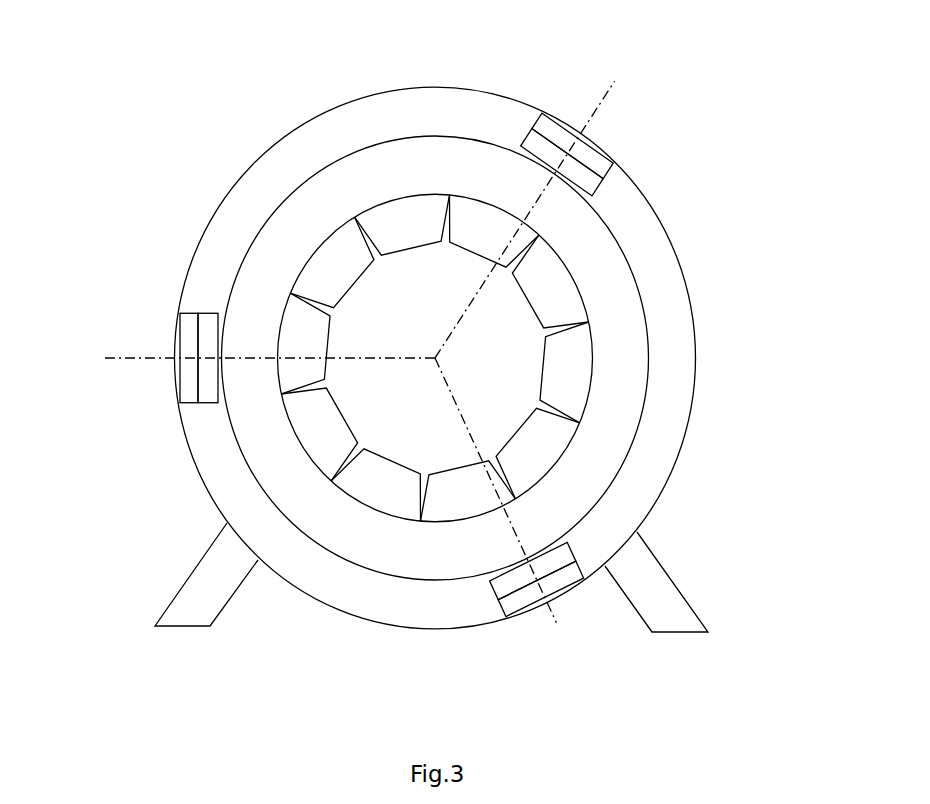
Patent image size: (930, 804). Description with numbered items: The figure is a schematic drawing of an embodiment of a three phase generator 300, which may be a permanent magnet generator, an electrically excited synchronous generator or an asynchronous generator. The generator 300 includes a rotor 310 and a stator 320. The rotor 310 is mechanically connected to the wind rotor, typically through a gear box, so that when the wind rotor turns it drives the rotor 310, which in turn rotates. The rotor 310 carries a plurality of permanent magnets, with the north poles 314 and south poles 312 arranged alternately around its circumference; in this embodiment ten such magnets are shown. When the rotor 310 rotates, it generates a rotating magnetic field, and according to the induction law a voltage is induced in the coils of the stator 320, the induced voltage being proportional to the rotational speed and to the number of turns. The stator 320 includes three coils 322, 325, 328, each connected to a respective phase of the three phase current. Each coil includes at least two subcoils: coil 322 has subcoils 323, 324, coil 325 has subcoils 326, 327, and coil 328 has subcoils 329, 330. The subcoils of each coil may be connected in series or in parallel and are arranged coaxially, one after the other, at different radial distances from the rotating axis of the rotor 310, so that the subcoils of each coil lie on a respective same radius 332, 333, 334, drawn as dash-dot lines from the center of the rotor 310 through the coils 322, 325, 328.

The three phase generator 300 is at (300, 75).
The rotor 310 is at (330, 215).
The south pole permanent magnet 312 is at (577, 377).
The north pole permanent magnet 314 is at (572, 293).
The stator 320 is at (680, 340).
The coil 322 is at (155, 392).
The subcoil 323 is at (207, 367).
The subcoil 324 is at (188, 337).
The coil 325 is at (577, 592).
The subcoil 326 is at (503, 587).
The subcoil 327 is at (533, 592).
The coil 328 is at (567, 118).
The subcoil 329 is at (567, 168).
The subcoil 330 is at (568, 147).
The radius 332 is at (258, 370).
The radius 333 is at (509, 502).
The radius 334 is at (548, 217).